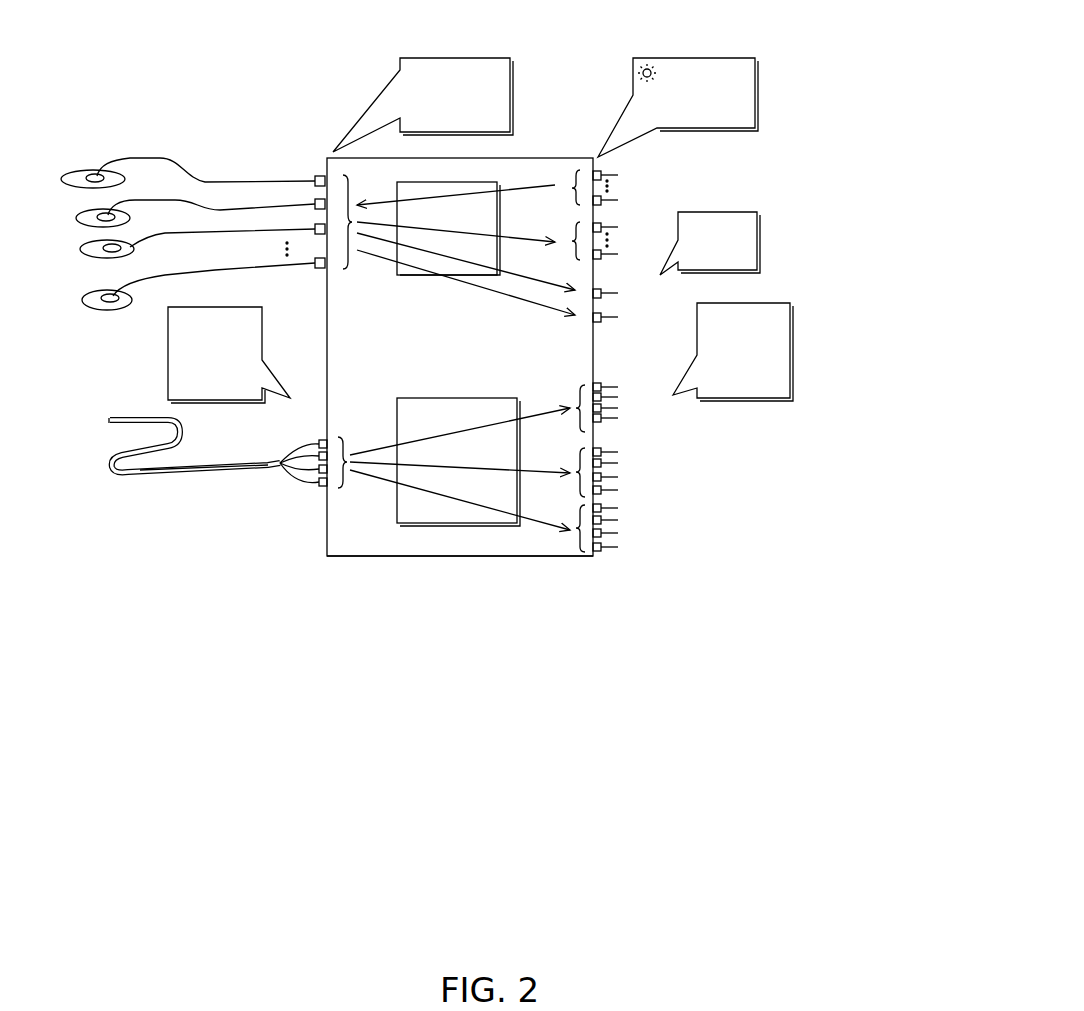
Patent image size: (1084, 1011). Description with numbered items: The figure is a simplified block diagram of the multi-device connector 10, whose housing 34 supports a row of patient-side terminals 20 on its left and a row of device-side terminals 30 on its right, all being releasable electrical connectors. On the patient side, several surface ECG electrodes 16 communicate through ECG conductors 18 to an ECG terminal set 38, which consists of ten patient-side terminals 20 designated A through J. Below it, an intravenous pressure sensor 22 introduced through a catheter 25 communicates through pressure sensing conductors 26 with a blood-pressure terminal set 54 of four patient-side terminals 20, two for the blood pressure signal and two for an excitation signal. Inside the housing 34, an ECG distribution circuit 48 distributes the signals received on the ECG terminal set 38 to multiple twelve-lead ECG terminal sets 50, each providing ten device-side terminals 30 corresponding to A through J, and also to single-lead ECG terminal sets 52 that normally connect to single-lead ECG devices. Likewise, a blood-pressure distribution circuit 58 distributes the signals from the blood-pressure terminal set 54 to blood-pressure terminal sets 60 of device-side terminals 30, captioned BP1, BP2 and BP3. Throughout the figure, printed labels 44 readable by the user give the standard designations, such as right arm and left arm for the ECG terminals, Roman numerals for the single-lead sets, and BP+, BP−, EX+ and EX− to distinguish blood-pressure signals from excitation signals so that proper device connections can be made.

The multi-device connector 10 is at (537, 133).
The surface ECG electrodes 16 is at (85, 188).
The ECG conductors 18 is at (212, 236).
The patient-side terminals 20 is at (312, 292).
The intravenous pressure sensor 22 is at (110, 425).
The catheter 25 is at (155, 472).
The pressure sensing conductors 26 is at (300, 475).
The device-side terminals 30 is at (654, 172).
The housing 34 is at (458, 556).
The ECG terminal set 38 is at (268, 147).
The labels 44 is at (478, 68).
The ECG distribution circuit 48 is at (417, 275).
The ECG terminal sets 50 is at (645, 245).
The single-lead ECG terminal sets 52 is at (672, 316).
The blood-pressure terminal set 54 is at (310, 527).
The blood-pressure distribution circuit 58 is at (460, 398).
The blood-pressure terminal sets 60 is at (713, 418).